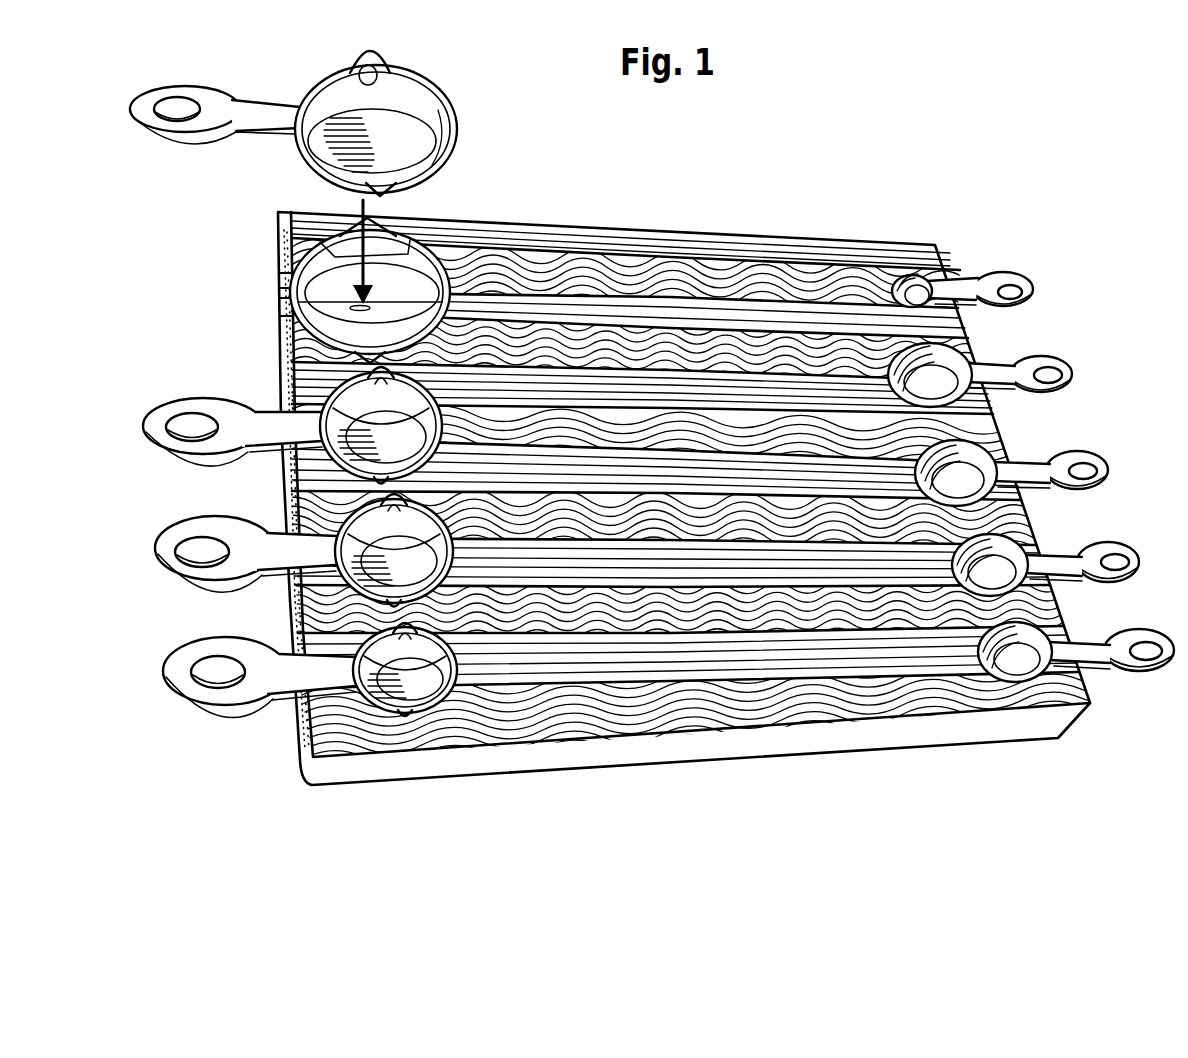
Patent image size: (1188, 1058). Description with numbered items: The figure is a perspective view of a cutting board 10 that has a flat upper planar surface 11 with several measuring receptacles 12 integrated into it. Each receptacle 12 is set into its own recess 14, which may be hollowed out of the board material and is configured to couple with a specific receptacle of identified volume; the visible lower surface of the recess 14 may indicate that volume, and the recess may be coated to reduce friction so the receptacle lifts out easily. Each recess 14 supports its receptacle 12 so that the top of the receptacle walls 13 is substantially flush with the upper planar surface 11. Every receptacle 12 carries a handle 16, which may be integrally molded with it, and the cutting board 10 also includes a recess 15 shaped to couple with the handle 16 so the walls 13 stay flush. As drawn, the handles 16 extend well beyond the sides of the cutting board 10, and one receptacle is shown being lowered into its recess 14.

The cutting board 10 is at (888, 216).
The upper planar surface 11 is at (869, 605).
The measuring receptacle 12 is at (397, 687).
The receptacle walls 13 is at (433, 705).
The recess 14 is at (400, 287).
The recess 15 is at (282, 292).
The handle 16 is at (252, 693).